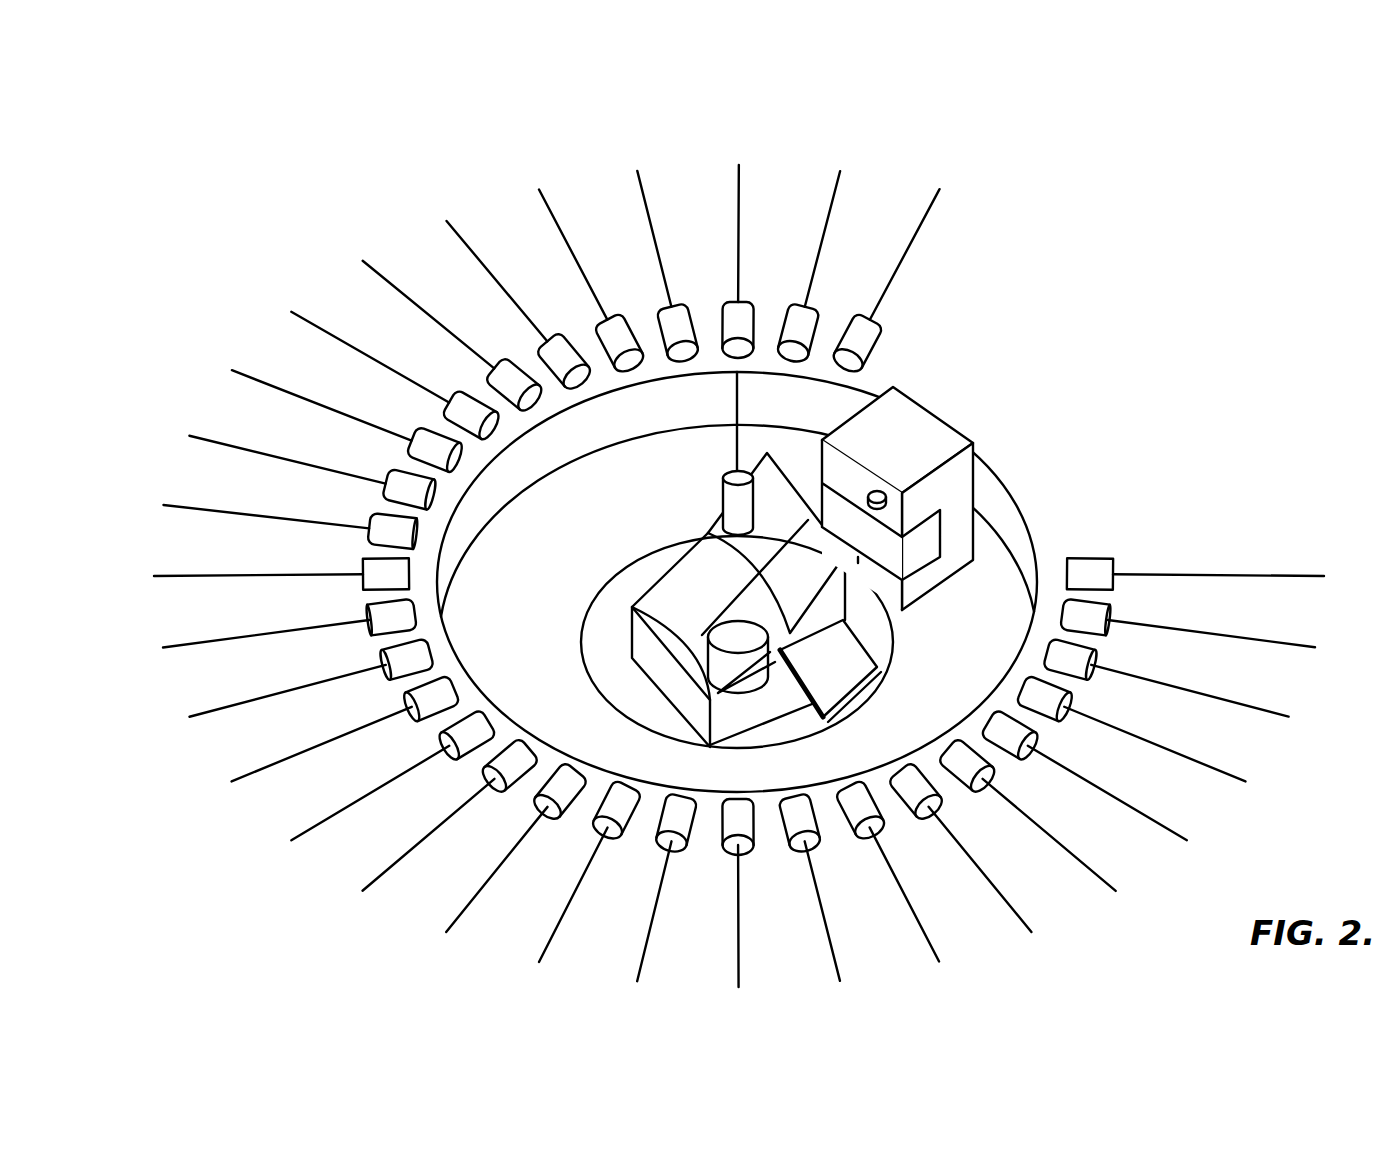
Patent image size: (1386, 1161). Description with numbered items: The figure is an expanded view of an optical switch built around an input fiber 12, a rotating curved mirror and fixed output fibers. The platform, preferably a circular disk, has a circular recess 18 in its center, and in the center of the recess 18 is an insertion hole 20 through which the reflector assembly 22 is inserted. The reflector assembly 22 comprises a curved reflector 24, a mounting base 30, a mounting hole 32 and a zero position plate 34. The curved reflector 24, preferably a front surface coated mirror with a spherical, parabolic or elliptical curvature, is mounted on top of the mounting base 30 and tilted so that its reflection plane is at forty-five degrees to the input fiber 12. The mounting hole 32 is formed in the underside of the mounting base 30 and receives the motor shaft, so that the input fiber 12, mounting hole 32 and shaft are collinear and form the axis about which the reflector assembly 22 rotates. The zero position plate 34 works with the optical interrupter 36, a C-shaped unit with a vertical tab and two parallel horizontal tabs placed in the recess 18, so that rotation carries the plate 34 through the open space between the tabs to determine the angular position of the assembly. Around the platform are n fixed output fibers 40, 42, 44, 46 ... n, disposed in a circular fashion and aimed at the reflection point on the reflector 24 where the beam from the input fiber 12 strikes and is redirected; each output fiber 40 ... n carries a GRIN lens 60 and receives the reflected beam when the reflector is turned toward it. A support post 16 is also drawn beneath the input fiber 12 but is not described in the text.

The input fiber 12 is at (737, 444).
The fiber support post 16 is at (722, 492).
The recess 18 is at (993, 563).
The insertion hole 20 is at (613, 617).
The reflector assembly 22 is at (655, 559).
The curved reflector 24 is at (780, 550).
The mounting base 30 is at (754, 725).
The mounting hole 32 is at (726, 643).
The zero position plate 34 is at (860, 678).
The optical interrupter 36 is at (928, 428).
The output fiber 40 is at (1213, 574).
The output fiber 42 is at (1226, 635).
The output fiber 44 is at (1218, 696).
The output fiber 46 is at (1192, 763).
The GRIN lens 60 is at (1088, 557).
The output fiber n is at (927, 217).